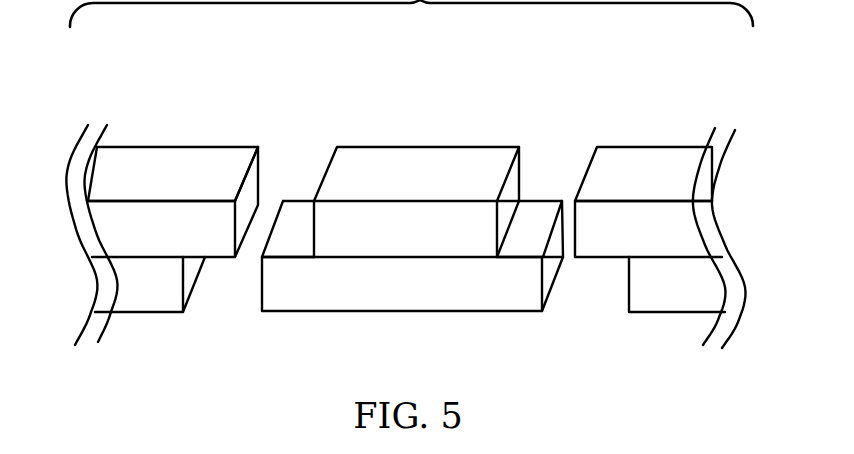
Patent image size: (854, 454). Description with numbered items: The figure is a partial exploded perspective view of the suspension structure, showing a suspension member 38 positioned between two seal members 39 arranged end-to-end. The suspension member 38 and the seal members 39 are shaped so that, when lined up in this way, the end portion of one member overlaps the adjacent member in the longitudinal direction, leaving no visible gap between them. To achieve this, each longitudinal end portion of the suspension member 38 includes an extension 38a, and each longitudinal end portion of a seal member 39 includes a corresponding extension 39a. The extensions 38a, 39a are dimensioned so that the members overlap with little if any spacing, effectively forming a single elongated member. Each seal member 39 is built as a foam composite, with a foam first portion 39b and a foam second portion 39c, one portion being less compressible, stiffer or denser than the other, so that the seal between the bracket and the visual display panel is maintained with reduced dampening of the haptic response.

The suspension member 38 is at (412, 219).
The extension 38a is at (290, 302).
The seal member 39 is at (405, 189).
The extension 39a is at (218, 175).
The first portion 39b is at (145, 160).
The second portion 39c is at (153, 300).